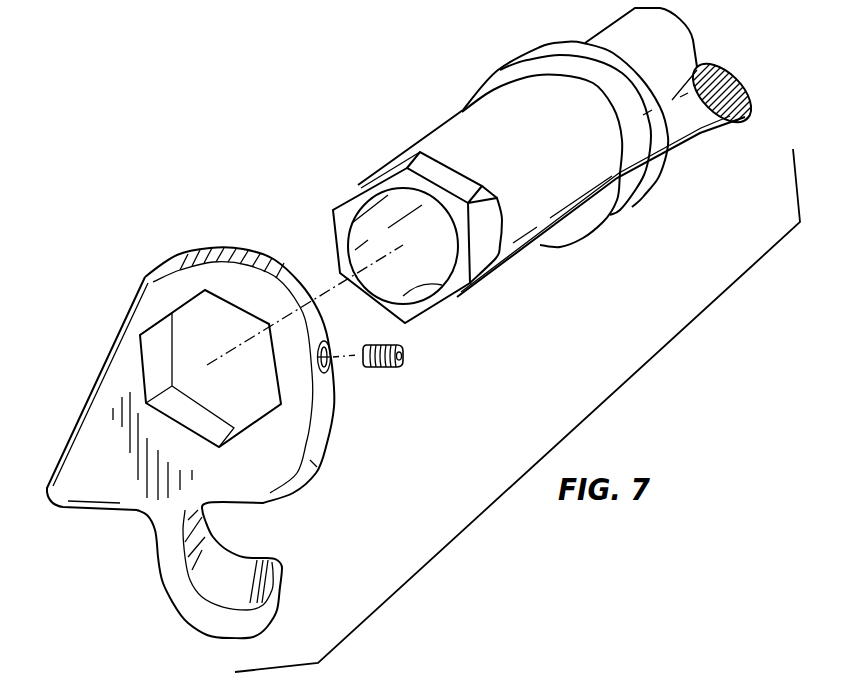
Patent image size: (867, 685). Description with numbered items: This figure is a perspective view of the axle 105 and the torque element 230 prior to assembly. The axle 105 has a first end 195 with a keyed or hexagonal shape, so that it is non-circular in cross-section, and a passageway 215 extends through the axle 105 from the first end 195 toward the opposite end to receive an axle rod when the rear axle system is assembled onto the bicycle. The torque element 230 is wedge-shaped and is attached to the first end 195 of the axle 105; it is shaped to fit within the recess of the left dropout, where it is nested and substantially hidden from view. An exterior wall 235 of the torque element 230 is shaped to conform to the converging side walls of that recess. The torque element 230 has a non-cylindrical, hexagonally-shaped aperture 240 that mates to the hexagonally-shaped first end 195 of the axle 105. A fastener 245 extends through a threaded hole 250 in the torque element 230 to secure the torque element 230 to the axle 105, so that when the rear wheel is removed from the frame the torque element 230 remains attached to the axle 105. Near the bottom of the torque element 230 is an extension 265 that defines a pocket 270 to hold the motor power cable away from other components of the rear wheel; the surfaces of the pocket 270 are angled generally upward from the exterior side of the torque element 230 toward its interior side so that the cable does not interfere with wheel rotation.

The axle 105 is at (498, 70).
The first end 195 is at (360, 185).
The passageway 215 is at (452, 300).
The torque element 230 is at (147, 282).
The exterior wall 235 is at (280, 270).
The aperture 240 is at (157, 355).
The fastener 245 is at (388, 368).
The threaded hole 250 is at (331, 363).
The extension 265 is at (240, 594).
The pocket 270 is at (268, 536).